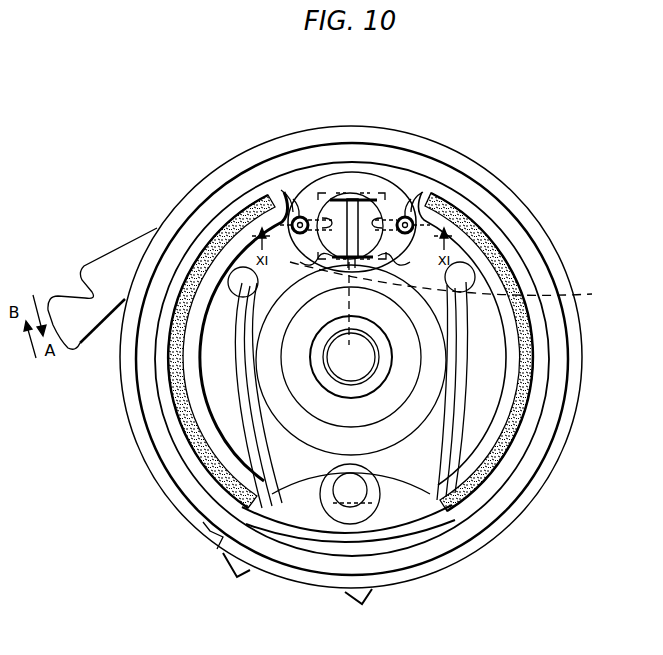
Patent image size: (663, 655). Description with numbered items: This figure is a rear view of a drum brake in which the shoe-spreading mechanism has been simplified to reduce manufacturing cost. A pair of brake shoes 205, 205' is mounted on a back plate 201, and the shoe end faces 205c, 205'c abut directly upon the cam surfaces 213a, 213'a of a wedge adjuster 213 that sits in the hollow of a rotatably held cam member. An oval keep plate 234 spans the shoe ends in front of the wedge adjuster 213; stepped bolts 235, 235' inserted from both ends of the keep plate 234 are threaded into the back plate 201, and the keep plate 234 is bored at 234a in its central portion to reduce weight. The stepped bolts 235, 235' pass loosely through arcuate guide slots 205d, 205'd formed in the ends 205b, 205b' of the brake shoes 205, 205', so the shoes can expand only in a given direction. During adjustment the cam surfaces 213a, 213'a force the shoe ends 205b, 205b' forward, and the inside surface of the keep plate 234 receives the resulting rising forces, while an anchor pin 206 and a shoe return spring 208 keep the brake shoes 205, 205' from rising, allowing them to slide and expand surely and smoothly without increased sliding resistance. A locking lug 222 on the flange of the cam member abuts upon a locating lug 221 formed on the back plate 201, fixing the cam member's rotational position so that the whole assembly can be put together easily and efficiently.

The back plate 201 is at (578, 332).
The brake shoe 205 is at (182, 354).
The brake shoe 205' is at (523, 338).
The end of brake shoe 205b is at (497, 178).
The end of brake shoe 205b' is at (228, 161).
The end face of brake shoe 205c is at (372, 195).
The end face of brake shoe 205'c is at (307, 179).
The arcuate guide slot 205d is at (425, 200).
The arcuate guide slot 205'd is at (260, 152).
The anchor pin 206 is at (352, 493).
The shoe return spring 208 is at (508, 487).
The wedge adjuster 213 is at (351, 178).
The cam surface 213a is at (325, 262).
The cam surface 213'a is at (532, 373).
The locating lug 221 is at (351, 358).
The locking lug 222 is at (580, 294).
The keep plate 234 is at (392, 180).
The bore of keep plate 234a is at (452, 272).
The stepped bolt 235 is at (504, 342).
The stepped bolt 235' is at (218, 332).